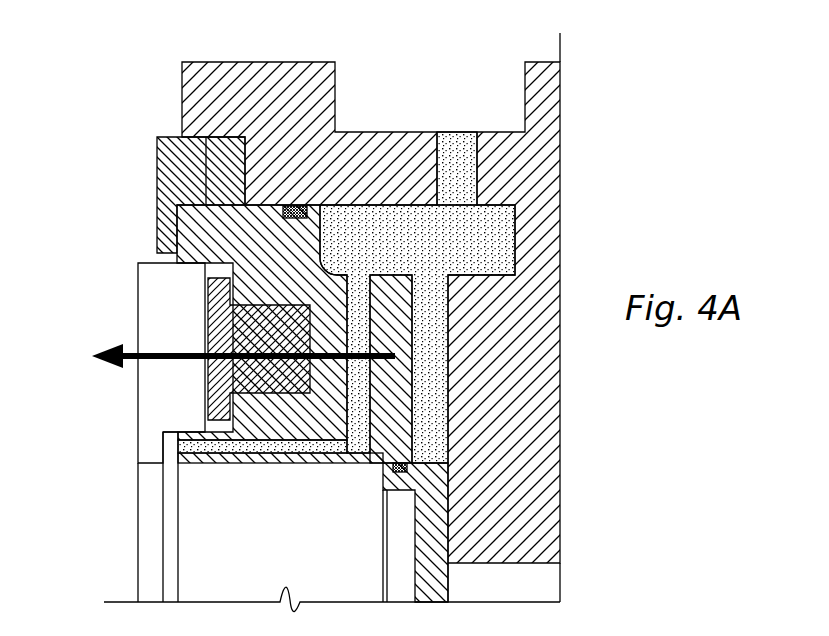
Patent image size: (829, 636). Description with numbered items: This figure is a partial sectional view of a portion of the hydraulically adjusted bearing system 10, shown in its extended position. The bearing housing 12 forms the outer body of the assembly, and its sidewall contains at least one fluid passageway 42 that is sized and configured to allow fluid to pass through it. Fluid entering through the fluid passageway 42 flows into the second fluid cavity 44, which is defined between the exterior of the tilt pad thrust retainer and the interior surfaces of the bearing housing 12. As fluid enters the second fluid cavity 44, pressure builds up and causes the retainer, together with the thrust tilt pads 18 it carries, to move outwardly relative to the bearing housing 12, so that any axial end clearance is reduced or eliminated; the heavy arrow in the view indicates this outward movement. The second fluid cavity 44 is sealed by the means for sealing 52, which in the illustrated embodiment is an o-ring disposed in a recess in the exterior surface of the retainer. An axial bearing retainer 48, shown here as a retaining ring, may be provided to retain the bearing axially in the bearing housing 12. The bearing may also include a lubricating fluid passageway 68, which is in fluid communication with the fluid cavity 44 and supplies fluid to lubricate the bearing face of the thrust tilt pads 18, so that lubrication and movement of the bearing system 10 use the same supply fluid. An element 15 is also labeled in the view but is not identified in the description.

The hydraulically adjusted bearing system 10 is at (110, 133).
The bearing housing 12 is at (213, 95).
The sleeve body 15 is at (190, 256).
The thrust tilt pad 18 is at (170, 300).
The fluid passageway 42 is at (453, 155).
The second fluid cavity 44 is at (393, 230).
The axial bearing retainer 48 is at (157, 201).
The means for sealing 52 is at (297, 203).
The lubricating fluid passageway 68 is at (218, 448).